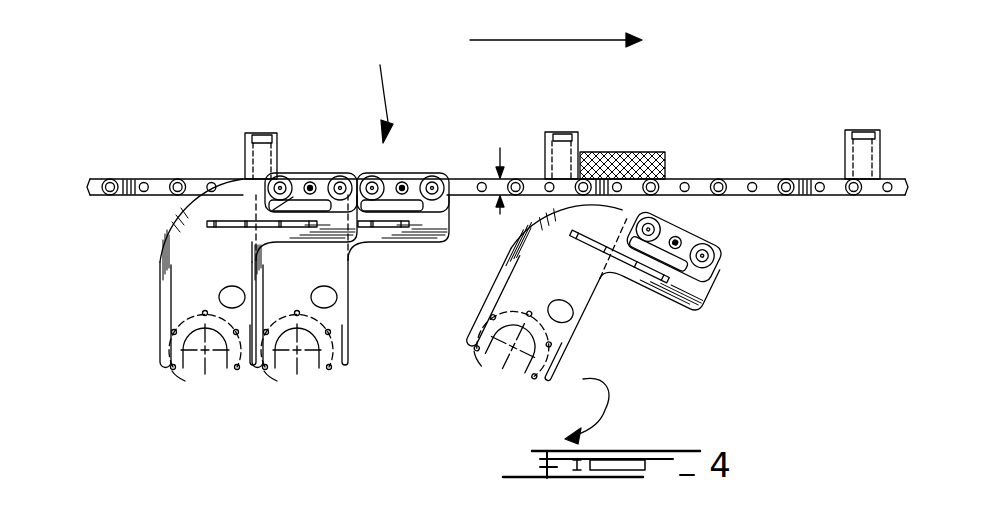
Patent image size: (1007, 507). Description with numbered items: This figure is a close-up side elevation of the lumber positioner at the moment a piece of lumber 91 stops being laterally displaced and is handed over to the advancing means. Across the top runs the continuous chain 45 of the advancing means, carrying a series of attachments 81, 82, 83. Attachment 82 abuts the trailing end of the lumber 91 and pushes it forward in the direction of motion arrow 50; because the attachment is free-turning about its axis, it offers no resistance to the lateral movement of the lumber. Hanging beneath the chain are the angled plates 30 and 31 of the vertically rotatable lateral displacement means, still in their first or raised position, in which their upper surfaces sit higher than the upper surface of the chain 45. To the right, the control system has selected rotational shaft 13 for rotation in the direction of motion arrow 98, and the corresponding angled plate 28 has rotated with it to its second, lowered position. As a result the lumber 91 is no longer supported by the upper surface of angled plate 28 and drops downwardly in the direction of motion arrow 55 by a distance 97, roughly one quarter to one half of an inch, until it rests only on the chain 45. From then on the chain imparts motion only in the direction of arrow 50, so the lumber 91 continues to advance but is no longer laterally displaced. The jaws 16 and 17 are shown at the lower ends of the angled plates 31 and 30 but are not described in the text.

The rotational shaft 13 is at (496, 366).
The clamp jaw of hanger 16 is at (324, 374).
The clamp jaw of hanger 17 is at (218, 384).
The angled plate 28 is at (575, 329).
The angled plate 30 is at (350, 304).
The angled plate 31 is at (230, 314).
The chain 45 is at (834, 196).
The motion arrow 50 is at (556, 25).
The motion arrow 55 is at (382, 90).
The attachment 81 is at (264, 133).
The attachment 82 is at (564, 132).
The attachment 83 is at (862, 130).
The piece of lumber 91 is at (665, 152).
The distance 97 is at (522, 172).
The motion arrow 98 is at (607, 411).